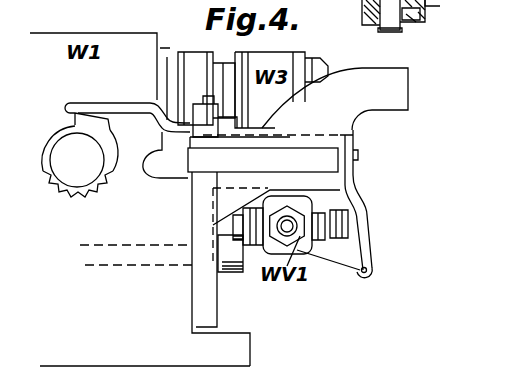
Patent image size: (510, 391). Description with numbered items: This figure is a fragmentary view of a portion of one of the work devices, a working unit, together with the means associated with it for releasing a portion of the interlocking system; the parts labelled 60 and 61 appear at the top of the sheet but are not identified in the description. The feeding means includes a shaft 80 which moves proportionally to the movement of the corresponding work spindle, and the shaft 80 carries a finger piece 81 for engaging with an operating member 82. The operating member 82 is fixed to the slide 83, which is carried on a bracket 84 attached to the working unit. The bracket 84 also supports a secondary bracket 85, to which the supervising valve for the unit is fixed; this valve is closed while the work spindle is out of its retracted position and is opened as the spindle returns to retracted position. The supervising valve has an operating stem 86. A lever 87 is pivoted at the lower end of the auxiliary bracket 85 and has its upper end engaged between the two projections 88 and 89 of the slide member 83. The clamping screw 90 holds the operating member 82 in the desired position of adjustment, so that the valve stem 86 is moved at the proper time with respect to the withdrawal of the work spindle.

The fitting 60 is at (402, 32).
The fitting nut 61 is at (440, 5).
The shaft 80 is at (75, 170).
The finger piece 81 is at (100, 131).
The operating member 82 is at (118, 110).
The slide 83 is at (397, 88).
The bracket 84 is at (196, 293).
The secondary bracket 85 is at (345, 262).
The operating stem 86 is at (348, 222).
The lever 87 is at (363, 217).
The projection 88 is at (300, 163).
The projection 89 is at (360, 152).
The clamping screw 90 is at (205, 108).